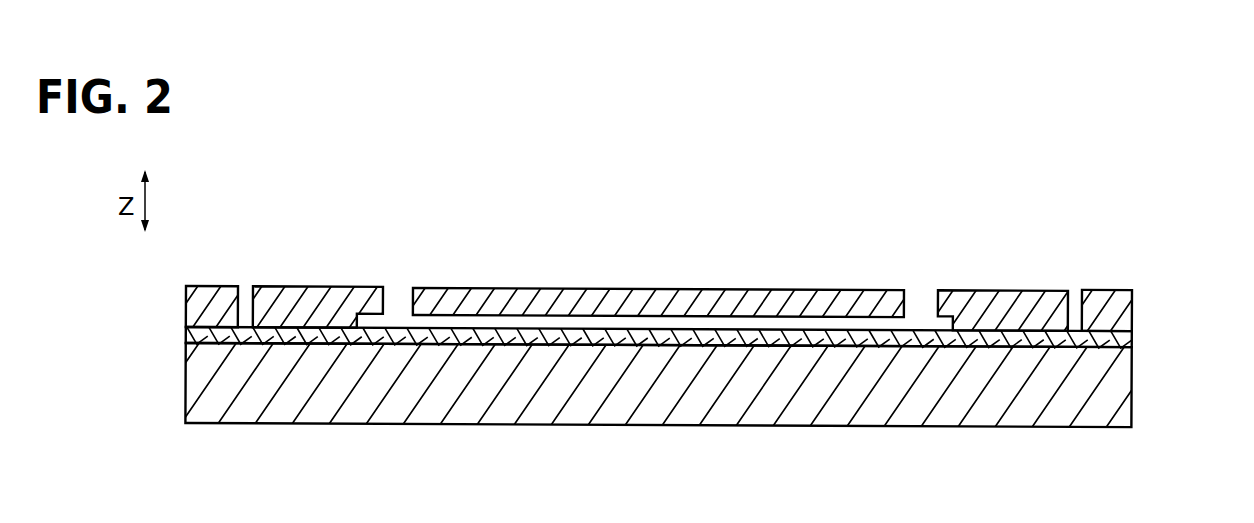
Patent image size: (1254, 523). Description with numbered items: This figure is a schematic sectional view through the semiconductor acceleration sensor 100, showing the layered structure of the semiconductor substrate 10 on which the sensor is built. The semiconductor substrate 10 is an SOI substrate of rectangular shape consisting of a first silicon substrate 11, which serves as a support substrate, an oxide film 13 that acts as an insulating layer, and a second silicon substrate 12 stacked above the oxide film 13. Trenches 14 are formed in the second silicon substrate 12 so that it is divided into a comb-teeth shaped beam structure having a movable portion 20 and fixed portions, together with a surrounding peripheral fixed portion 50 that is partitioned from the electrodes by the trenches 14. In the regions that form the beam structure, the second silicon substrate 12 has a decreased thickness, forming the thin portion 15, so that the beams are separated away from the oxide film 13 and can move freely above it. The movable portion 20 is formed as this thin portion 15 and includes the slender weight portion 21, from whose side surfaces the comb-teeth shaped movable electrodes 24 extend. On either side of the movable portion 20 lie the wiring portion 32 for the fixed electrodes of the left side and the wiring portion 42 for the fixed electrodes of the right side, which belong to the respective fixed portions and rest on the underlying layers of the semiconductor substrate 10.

The semiconductor substrate 10 is at (697, 367).
The first silicon substrate 11 is at (1125, 373).
The second silicon substrate 12 is at (1161, 317).
The oxide film 13 is at (1125, 342).
The trenches 14 is at (246, 297).
The thin portion 15 is at (573, 317).
The movable portion 20 is at (718, 280).
The weight portion 21 is at (653, 287).
The movable electrodes 24 is at (427, 287).
The wiring portion for the fixed electrodes of the left side 32 is at (269, 290).
The wiring portion for the fixed electrodes of the right side 42 is at (1059, 289).
The peripheral fixed portion 50 is at (186, 289).
The semiconductor acceleration sensor 100 is at (1096, 242).